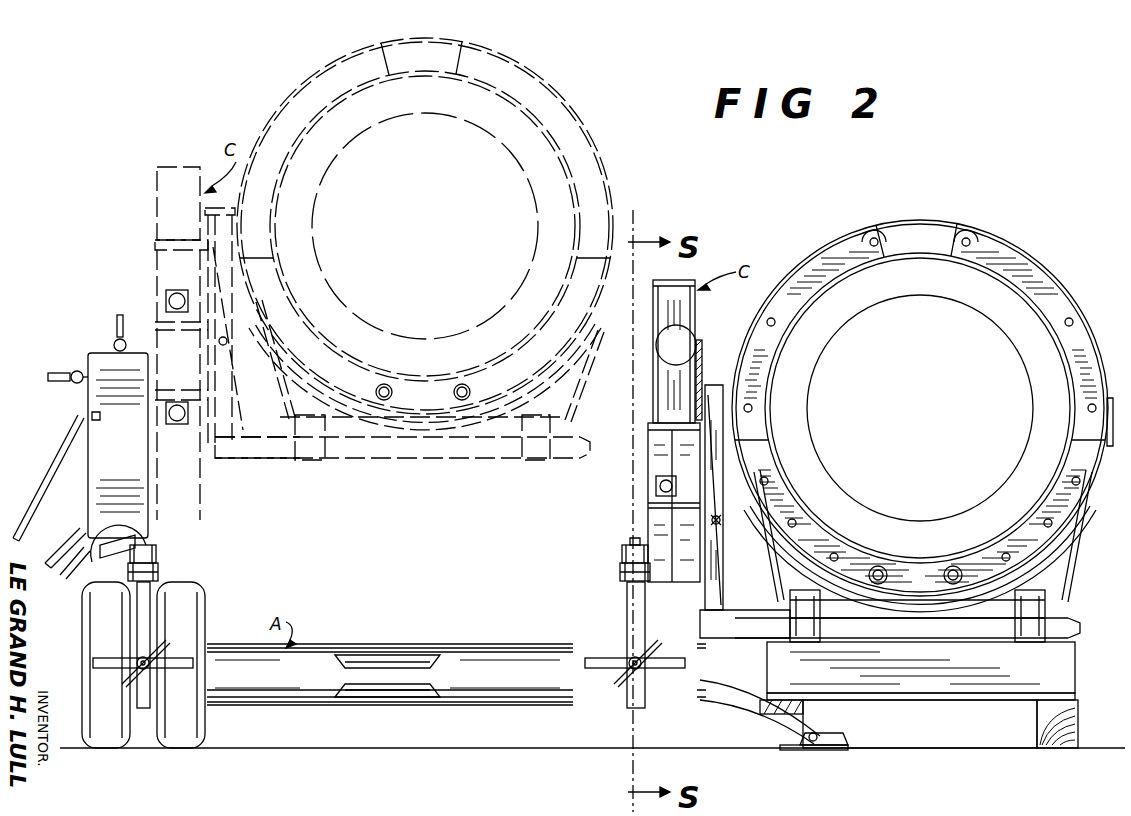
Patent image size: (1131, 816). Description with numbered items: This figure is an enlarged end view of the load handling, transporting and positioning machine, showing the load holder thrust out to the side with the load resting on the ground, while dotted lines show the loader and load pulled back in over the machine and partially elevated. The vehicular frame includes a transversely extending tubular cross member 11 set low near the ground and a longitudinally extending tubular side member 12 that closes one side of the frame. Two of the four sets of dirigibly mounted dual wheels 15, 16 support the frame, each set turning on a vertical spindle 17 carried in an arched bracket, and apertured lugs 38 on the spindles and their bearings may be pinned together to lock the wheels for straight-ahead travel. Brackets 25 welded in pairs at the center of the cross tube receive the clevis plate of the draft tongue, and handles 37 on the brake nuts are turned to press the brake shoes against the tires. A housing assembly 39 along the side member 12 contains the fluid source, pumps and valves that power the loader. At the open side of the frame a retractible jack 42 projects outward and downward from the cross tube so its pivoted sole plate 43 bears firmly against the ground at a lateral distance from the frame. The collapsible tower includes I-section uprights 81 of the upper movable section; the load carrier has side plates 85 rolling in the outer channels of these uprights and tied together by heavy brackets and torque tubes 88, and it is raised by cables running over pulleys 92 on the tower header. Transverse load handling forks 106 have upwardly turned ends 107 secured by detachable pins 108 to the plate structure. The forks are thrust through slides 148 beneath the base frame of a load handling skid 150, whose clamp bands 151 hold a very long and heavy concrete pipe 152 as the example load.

The cross member 11 is at (498, 646).
The side member 12 is at (94, 524).
The dual wheels 15 is at (572, 738).
The dual wheels 16 is at (206, 602).
The vertical spindle 17 is at (160, 550).
The brackets 25 is at (385, 680).
The handles 37 is at (172, 656).
The apertured lugs 38 is at (160, 574).
The housing assembly 39 is at (96, 406).
The jacks 42 is at (744, 698).
The sole plates 43 is at (838, 746).
The uprights 81 is at (688, 318).
The side plates 85 is at (652, 432).
The brackets and torque tubes 88 is at (660, 482).
The pulleys 92 is at (692, 348).
The load handling forks 106 is at (286, 460).
The upwardly turned ends 107 is at (724, 588).
The pins 108 is at (721, 524).
The slides 148 is at (1028, 640).
The load handling skid 150 is at (578, 392).
The clamp bands 151 is at (1050, 314).
The concrete pipe 152 is at (562, 166).